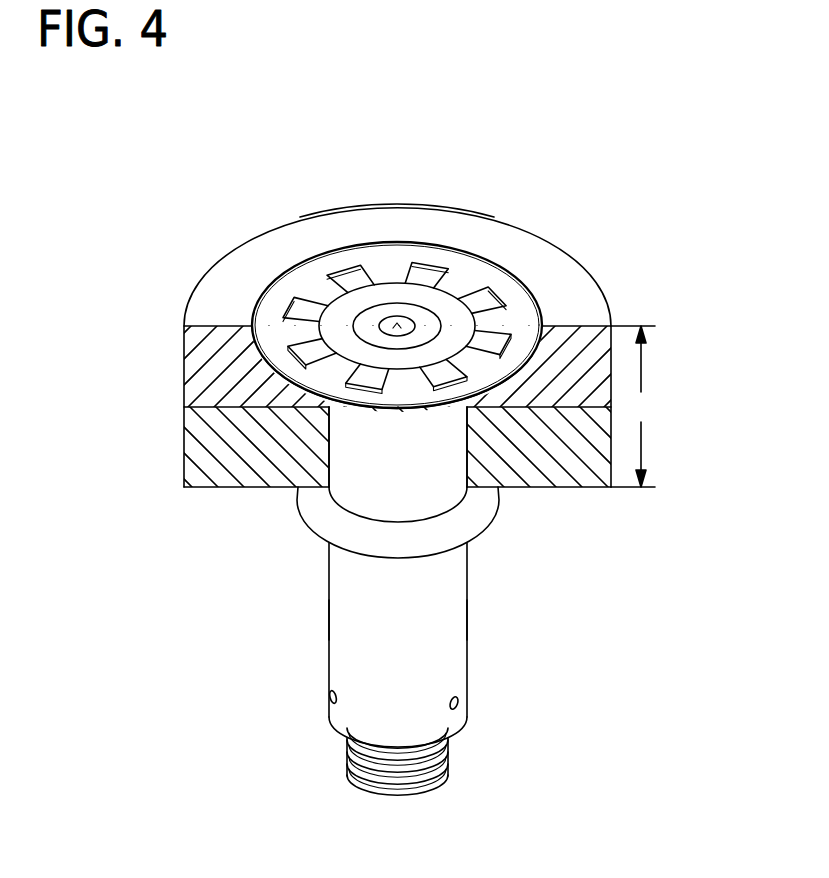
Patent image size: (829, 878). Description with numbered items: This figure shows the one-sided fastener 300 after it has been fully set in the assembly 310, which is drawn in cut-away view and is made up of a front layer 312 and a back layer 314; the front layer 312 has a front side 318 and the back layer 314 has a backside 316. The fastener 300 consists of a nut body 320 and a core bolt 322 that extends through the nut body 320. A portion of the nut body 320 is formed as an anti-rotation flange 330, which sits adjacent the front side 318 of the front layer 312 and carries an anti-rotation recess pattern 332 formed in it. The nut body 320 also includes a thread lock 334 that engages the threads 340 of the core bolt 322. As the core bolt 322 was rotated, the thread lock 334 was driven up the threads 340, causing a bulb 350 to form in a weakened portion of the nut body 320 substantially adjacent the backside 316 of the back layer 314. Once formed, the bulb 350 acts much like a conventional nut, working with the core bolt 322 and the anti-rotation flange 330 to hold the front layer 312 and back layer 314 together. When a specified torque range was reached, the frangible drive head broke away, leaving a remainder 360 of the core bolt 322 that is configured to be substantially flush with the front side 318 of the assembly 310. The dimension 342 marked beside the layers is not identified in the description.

The one-sided fastener 300 is at (472, 617).
The assembly 310 is at (222, 249).
The front layer 312 is at (184, 367).
The back layer 314 is at (184, 442).
The backside 316 is at (558, 488).
The front side 318 is at (386, 216).
The nut body 320 is at (329, 624).
The core bolt 322 is at (382, 795).
The anti-rotation flange 330 is at (510, 321).
The anti-rotation recess pattern 332 is at (367, 373).
The thread lock 334 is at (332, 704).
The threads 340 is at (423, 780).
The panel thickness dimension 342 is at (639, 406).
The bulb 350 is at (306, 523).
The remainder of the core bolt 360 is at (408, 312).